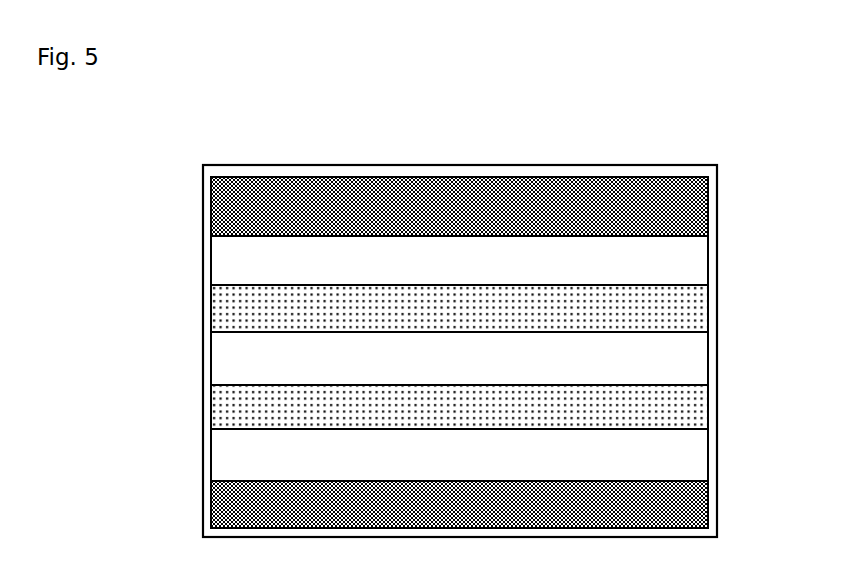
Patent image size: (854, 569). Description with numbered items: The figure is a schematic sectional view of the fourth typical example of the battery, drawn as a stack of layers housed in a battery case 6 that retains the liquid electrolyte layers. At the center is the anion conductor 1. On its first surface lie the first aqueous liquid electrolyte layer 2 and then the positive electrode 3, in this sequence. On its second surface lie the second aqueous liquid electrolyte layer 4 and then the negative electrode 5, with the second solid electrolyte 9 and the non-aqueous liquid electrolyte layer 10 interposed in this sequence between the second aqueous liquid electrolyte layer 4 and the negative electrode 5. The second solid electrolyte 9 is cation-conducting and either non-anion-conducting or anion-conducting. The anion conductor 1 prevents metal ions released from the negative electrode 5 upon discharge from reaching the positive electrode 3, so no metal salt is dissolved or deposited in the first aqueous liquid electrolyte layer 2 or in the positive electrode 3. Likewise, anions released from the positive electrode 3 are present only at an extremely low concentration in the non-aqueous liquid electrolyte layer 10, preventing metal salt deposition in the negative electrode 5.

The battery case 6 is at (710, 175).
The positive electrode 3 is at (682, 212).
The first aqueous liquid electrolyte layer 2 is at (680, 267).
The anion conductor 1 is at (682, 312).
The second aqueous liquid electrolyte layer 4 is at (682, 368).
The second solid electrolyte 9 is at (682, 413).
The non-aqueous liquid electrolyte layer 10 is at (688, 460).
The negative electrode 5 is at (687, 510).